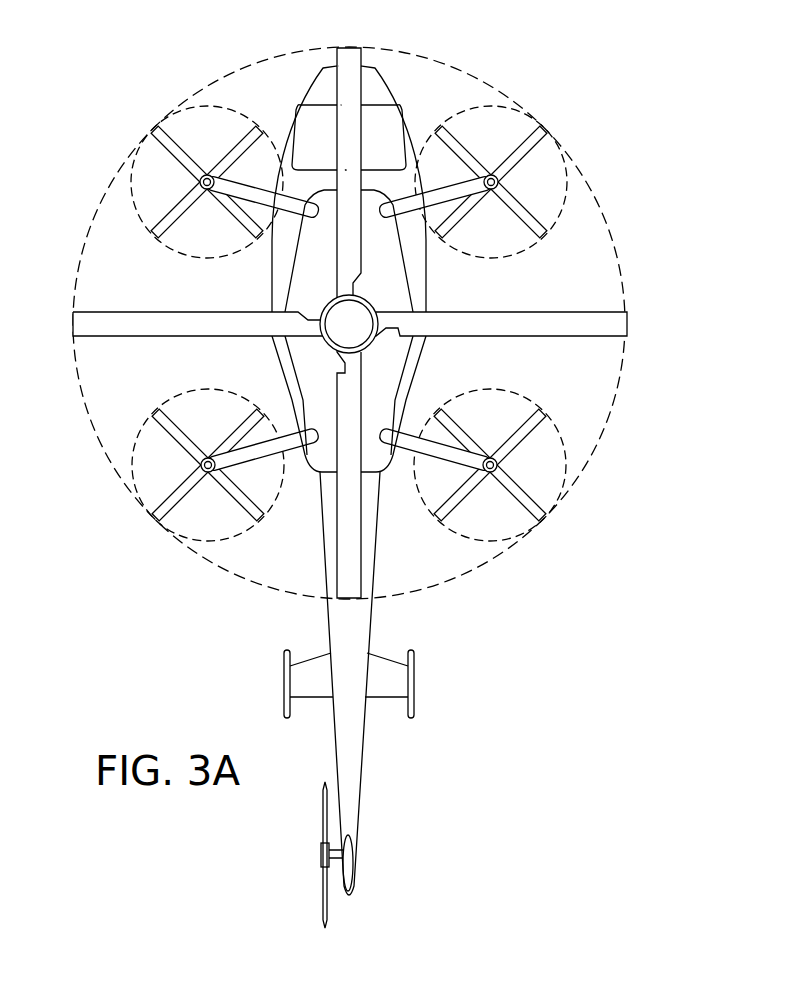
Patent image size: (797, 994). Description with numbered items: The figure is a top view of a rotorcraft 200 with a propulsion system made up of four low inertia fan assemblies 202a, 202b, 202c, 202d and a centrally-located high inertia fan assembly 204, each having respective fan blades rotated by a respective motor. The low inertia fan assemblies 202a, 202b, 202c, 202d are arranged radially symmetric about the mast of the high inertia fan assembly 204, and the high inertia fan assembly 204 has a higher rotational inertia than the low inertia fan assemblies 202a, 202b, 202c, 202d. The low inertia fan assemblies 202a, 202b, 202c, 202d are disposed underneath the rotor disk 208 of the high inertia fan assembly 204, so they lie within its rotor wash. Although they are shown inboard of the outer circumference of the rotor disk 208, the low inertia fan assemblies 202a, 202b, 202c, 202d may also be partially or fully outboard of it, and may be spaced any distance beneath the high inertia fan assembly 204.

The rotorcraft 200 is at (118, 69).
The low inertia fan assembly 202a is at (170, 152).
The low inertia fan assembly 202b is at (173, 488).
The low inertia fan assembly 202c is at (527, 485).
The low inertia fan assembly 202d is at (530, 157).
The high inertia fan assembly 204 is at (560, 311).
The rotor disk 208 is at (613, 401).